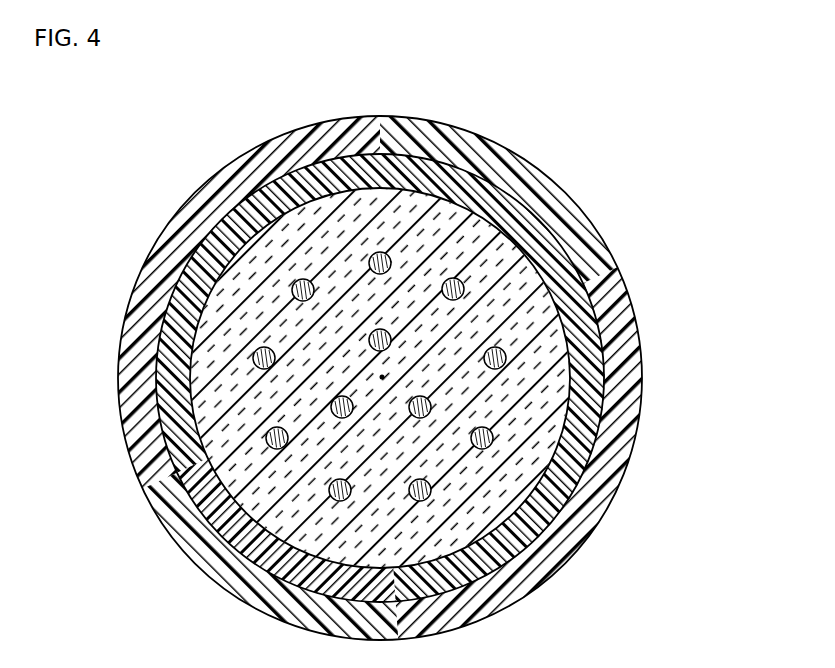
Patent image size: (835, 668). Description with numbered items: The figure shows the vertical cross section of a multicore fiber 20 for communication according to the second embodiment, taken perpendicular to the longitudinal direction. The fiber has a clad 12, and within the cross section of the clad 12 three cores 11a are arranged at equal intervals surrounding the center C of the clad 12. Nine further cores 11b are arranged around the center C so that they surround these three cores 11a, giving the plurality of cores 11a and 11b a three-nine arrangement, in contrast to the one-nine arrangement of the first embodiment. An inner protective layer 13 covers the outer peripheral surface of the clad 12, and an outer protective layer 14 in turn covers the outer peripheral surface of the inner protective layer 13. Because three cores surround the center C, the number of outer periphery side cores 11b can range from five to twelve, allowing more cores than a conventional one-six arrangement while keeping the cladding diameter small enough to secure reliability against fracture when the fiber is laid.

The multicore fiber 20 is at (399, 339).
The core 11a is at (374, 330).
The core 11b is at (296, 281).
The clad 12 is at (507, 267).
The inner protective layer 13 is at (615, 415).
The outer protective layer 14 is at (600, 385).
The center C is at (382, 377).